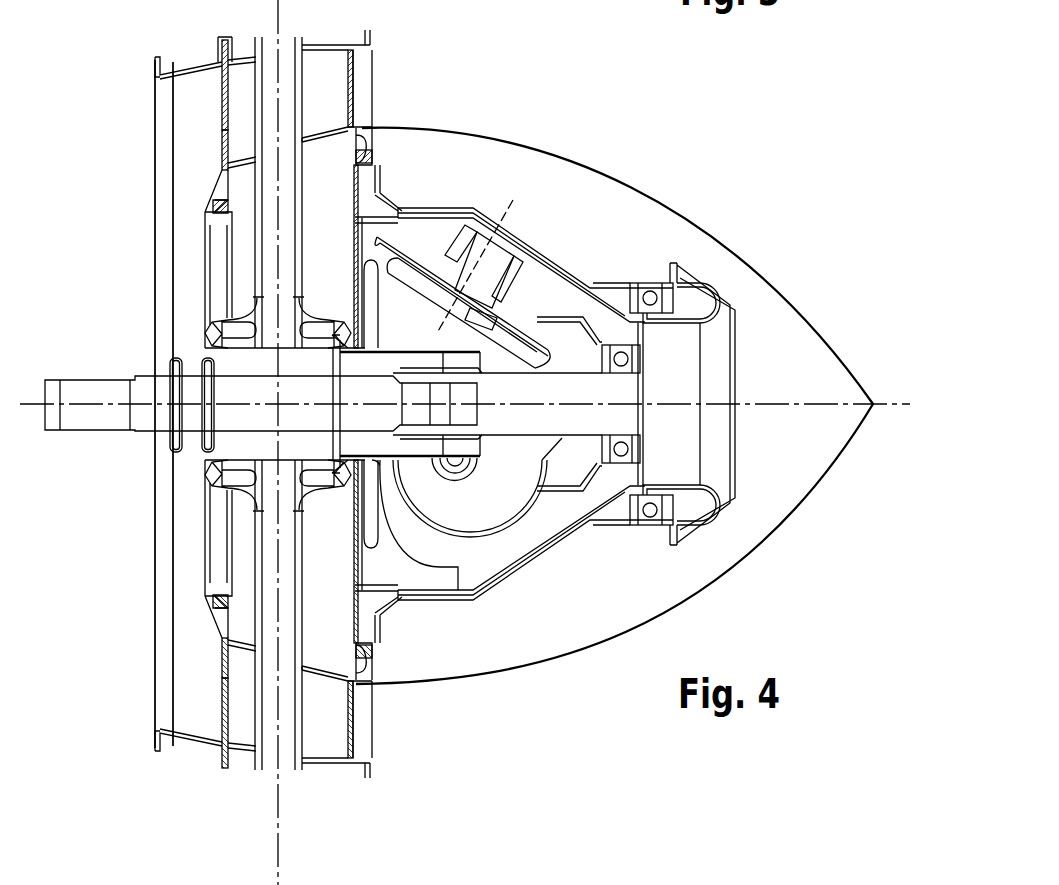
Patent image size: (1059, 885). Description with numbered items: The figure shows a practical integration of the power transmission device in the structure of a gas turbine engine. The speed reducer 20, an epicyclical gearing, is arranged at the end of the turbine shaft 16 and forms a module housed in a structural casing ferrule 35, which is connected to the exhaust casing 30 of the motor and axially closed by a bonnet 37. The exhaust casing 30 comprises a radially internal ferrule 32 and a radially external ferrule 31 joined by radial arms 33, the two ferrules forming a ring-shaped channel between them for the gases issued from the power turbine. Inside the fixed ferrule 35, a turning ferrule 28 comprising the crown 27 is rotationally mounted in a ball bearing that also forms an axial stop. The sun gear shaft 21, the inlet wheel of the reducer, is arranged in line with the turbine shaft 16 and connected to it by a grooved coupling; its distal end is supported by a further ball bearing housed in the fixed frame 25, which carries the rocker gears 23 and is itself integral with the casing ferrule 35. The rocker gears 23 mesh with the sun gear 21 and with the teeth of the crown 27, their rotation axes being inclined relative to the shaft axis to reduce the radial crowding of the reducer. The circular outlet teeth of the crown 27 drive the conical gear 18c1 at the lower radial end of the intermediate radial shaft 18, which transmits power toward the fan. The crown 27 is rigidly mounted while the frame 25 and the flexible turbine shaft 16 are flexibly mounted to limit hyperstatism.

The turbine shaft 16 is at (146, 374).
The intermediate shaft 18 is at (245, 619).
The conical gear 18c1 is at (212, 316).
The speed reducer 20 is at (520, 598).
The sun gear shaft 21 is at (578, 452).
The rocker gears 23 is at (532, 318).
The fixed frame 25 is at (544, 536).
The crown 27 is at (373, 234).
The turning ferrule 28 is at (382, 596).
The exhaust casing 30 is at (185, 748).
The radially external ferrule 31 is at (216, 60).
The radially internal ferrule 32 is at (217, 167).
The radial arms 33 is at (220, 100).
The structural casing ferrule 35 is at (458, 204).
The bonnet 37 is at (742, 312).